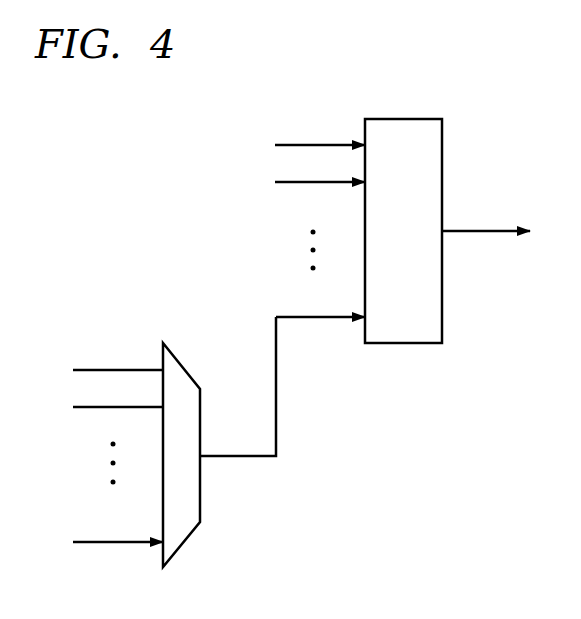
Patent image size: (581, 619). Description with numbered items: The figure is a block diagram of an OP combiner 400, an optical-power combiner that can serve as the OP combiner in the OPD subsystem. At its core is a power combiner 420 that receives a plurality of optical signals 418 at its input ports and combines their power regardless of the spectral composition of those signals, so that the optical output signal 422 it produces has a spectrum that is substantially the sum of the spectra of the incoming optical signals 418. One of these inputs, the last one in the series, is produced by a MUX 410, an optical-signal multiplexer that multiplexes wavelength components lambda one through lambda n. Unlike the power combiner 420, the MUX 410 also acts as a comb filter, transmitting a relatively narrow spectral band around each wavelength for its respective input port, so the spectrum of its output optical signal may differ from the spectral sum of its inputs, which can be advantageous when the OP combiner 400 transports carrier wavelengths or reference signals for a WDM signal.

The OP combiner 400 is at (123, 105).
The MUX 410 is at (200, 492).
The optical signals 418 is at (300, 315).
The power combiner 420 is at (393, 118).
The optical output signal 422 is at (489, 231).